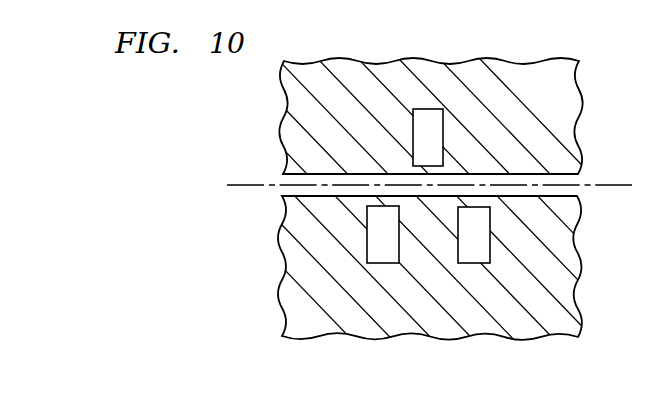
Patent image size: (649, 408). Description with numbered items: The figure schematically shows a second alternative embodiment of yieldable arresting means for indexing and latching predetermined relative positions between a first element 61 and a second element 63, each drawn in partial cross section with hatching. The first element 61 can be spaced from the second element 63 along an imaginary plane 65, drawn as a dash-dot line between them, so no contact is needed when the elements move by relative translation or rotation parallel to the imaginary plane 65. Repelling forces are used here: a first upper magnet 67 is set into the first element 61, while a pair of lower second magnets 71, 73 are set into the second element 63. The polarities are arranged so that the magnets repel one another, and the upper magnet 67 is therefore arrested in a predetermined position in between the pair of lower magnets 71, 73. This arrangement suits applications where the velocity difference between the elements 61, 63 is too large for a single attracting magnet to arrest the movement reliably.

The first element 61 is at (569, 126).
The second element 63 is at (568, 255).
The imaginary plane 65 is at (604, 185).
The first upper magnet 67 is at (433, 137).
The second magnet 71 is at (387, 232).
The second magnet 73 is at (479, 232).